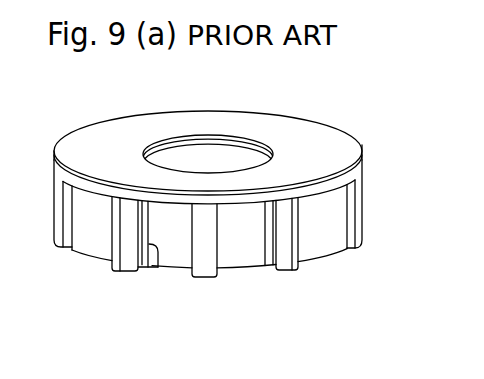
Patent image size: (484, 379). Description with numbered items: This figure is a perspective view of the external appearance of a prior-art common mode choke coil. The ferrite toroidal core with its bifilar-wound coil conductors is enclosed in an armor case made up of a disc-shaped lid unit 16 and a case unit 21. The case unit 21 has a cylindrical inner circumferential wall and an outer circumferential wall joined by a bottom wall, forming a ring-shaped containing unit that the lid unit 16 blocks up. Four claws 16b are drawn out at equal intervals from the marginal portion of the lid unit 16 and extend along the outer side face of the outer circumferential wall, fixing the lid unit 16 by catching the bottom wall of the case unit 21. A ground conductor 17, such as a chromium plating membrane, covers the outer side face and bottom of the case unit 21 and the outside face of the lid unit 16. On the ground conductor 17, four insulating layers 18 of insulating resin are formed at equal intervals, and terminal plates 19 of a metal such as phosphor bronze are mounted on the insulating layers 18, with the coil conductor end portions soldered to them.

The lid unit 16 is at (310, 134).
The claws 16b is at (55, 222).
The ground conductor 17 is at (360, 150).
The insulating layers 18 is at (157, 262).
The terminal plates 19 is at (128, 262).
The case unit 21 is at (334, 246).